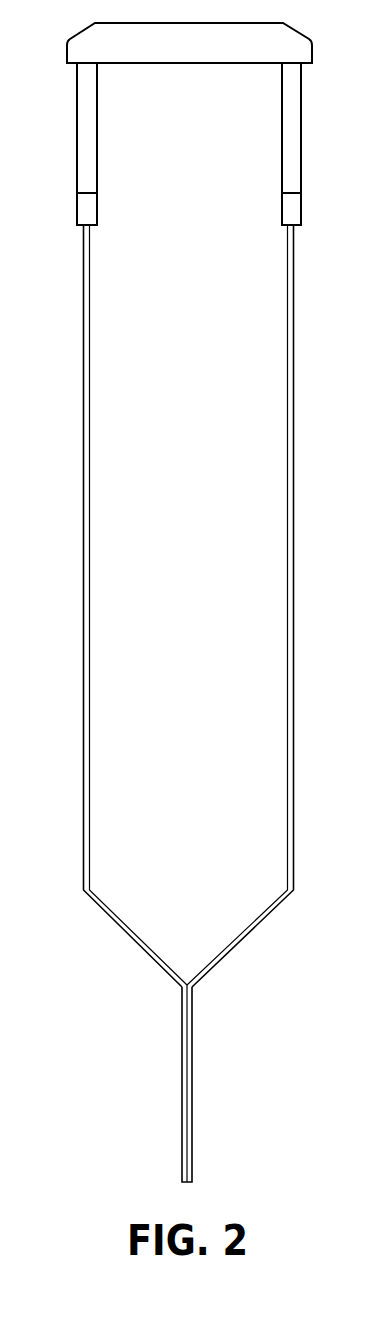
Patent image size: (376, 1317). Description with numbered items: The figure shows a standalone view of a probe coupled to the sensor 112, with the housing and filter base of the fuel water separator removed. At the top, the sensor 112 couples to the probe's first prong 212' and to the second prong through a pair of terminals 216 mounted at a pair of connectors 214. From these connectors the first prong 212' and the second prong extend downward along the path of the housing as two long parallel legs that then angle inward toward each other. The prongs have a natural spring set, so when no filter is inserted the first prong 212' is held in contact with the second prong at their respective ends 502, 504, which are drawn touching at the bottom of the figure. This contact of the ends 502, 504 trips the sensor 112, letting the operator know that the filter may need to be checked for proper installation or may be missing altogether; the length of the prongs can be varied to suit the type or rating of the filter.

The sensor 112 is at (88, 47).
The terminals 216 is at (88, 145).
The connectors 214 is at (88, 210).
The first prong 212' is at (277, 606).
The end of second prong 504 is at (182, 1105).
The end of first prong 502 is at (190, 1157).